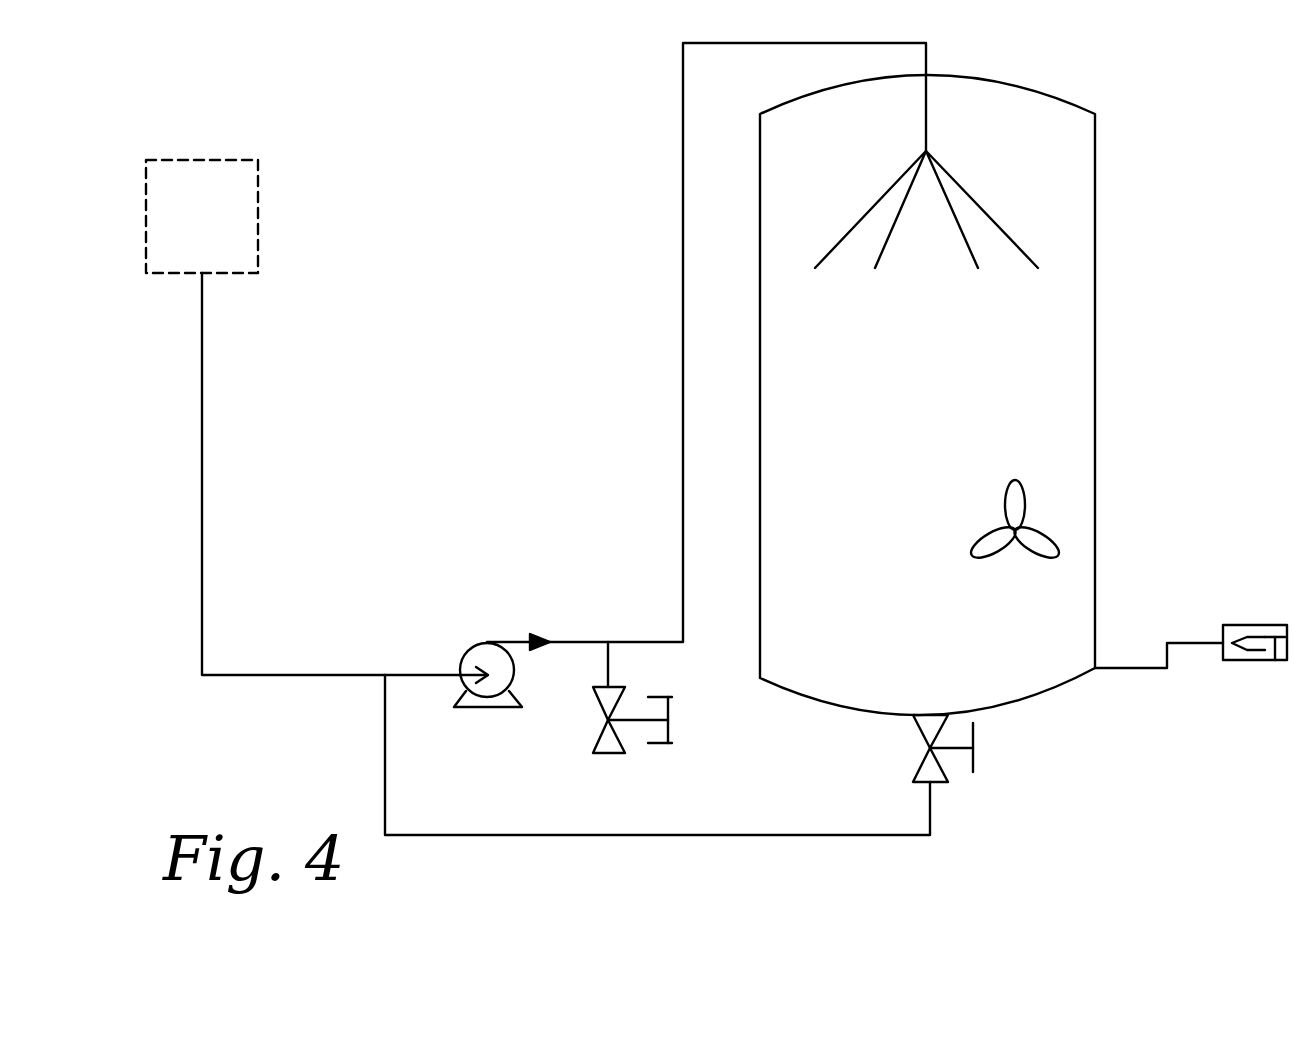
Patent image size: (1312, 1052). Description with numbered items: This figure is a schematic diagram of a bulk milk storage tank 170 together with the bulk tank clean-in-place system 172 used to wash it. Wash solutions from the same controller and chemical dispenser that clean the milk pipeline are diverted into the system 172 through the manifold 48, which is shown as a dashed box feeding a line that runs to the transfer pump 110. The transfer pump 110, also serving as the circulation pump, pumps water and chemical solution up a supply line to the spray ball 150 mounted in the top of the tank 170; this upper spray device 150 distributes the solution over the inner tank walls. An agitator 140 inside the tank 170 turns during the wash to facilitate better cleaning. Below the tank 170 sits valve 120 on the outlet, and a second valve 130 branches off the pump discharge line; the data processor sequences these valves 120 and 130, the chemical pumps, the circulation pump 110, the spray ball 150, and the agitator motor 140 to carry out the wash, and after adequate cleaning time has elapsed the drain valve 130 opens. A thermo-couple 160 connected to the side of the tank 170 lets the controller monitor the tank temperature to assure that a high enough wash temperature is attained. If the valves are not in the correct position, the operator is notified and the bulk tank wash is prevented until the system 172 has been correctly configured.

The manifold 48 is at (258, 207).
The transfer pump 110 is at (482, 660).
The valve 120 is at (935, 770).
The drain valve 130 is at (608, 755).
The agitator 140 is at (998, 510).
The spray ball 150 is at (926, 209).
The thermo-couple 160 is at (1255, 660).
The bulk milk storage tank 170 is at (1062, 338).
The bulk tank clean-in-place system 172 is at (552, 578).